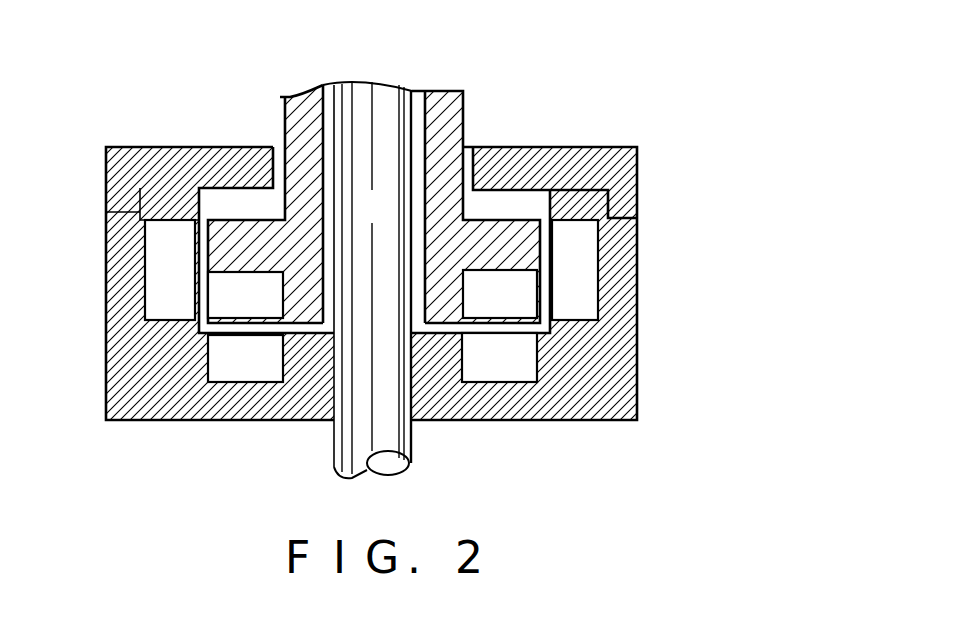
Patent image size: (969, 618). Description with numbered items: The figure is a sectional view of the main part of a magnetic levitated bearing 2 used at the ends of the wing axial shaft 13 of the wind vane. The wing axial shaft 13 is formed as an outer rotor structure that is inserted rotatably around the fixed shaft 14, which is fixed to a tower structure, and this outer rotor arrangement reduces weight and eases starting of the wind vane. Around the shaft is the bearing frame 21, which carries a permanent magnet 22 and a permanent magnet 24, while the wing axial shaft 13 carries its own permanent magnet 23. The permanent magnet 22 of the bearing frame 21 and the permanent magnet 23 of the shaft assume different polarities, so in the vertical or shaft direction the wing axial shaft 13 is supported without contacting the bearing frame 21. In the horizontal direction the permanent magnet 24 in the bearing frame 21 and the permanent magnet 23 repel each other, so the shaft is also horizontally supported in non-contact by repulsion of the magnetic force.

The magnetic coupling 2 is at (379, 260).
The wing axial shaft 13 is at (440, 112).
The fixed shaft 14 is at (417, 435).
The bearing frame 21 is at (637, 315).
The permanent magnet 22 is at (222, 378).
The permanent magnet 23 is at (230, 312).
The permanent magnet 24 is at (157, 257).